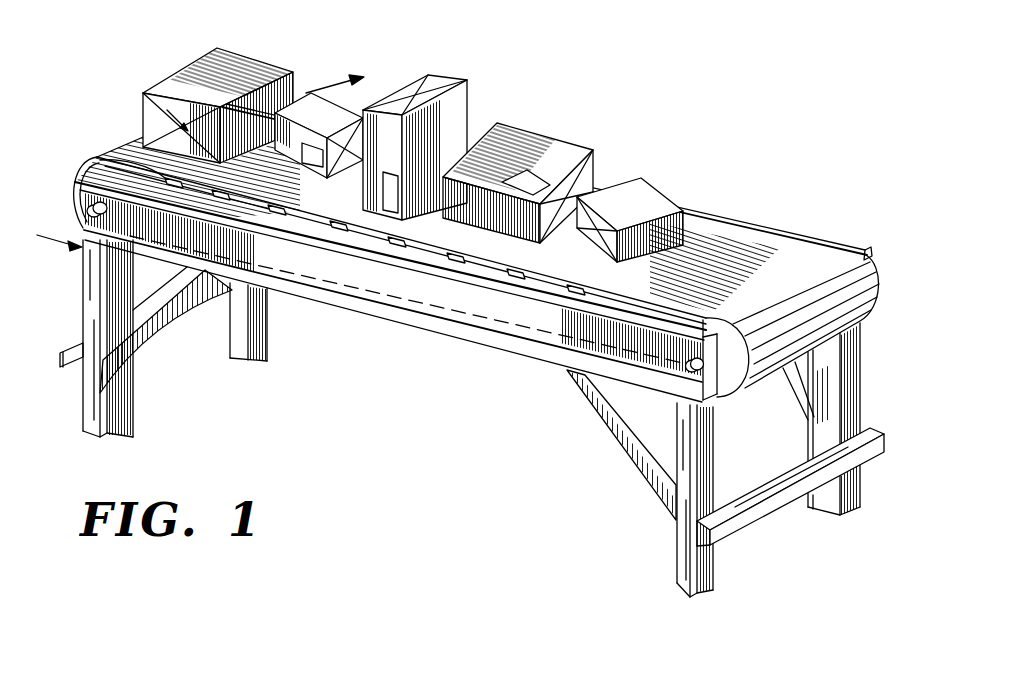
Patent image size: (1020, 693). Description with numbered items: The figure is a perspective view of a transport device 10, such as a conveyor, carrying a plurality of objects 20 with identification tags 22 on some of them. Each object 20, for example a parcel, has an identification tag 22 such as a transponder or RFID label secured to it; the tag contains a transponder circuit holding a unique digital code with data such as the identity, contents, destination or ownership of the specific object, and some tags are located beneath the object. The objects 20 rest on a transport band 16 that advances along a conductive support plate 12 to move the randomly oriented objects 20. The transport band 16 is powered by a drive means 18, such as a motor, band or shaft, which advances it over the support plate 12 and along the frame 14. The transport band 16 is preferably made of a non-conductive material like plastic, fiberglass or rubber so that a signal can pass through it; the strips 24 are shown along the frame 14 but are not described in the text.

The transport device 10 is at (645, 98).
The support plate 12 is at (455, 243).
The frame 14 is at (100, 407).
The transport band 16 is at (133, 152).
The drive means 18 is at (97, 163).
The object 20 is at (190, 77).
The identification tag 22 is at (157, 97).
The strip 24 is at (343, 222).